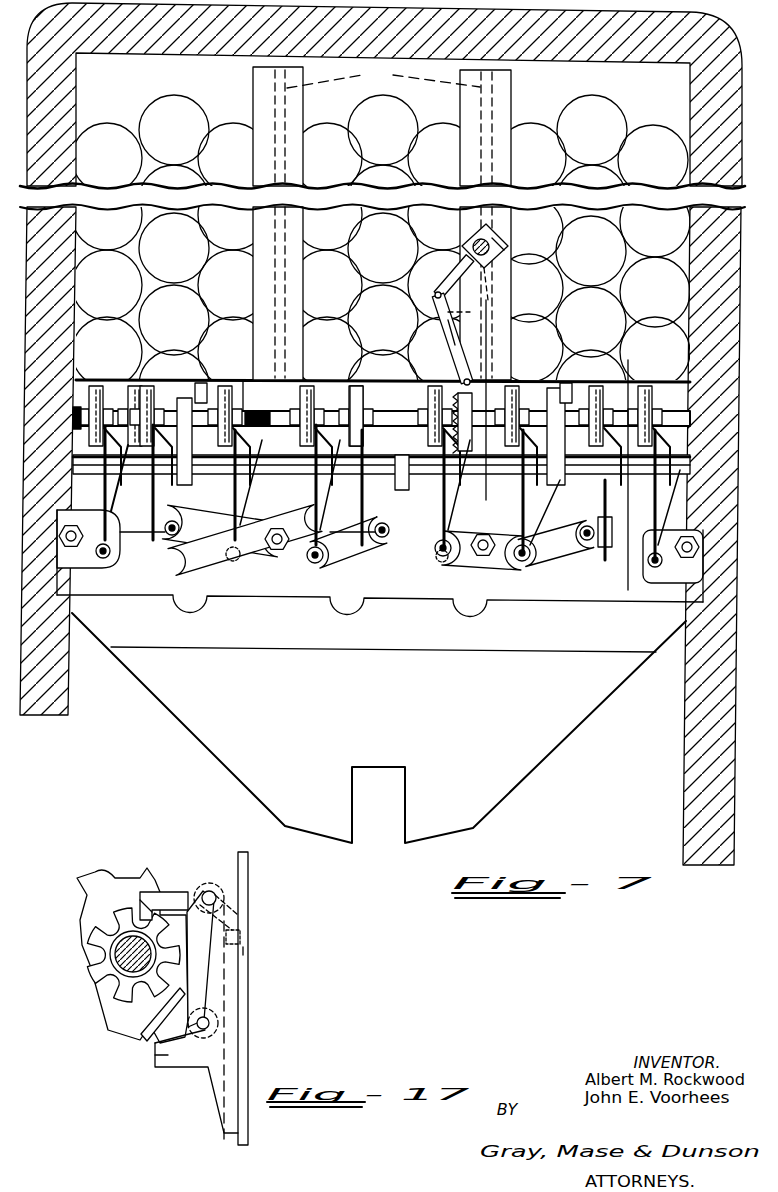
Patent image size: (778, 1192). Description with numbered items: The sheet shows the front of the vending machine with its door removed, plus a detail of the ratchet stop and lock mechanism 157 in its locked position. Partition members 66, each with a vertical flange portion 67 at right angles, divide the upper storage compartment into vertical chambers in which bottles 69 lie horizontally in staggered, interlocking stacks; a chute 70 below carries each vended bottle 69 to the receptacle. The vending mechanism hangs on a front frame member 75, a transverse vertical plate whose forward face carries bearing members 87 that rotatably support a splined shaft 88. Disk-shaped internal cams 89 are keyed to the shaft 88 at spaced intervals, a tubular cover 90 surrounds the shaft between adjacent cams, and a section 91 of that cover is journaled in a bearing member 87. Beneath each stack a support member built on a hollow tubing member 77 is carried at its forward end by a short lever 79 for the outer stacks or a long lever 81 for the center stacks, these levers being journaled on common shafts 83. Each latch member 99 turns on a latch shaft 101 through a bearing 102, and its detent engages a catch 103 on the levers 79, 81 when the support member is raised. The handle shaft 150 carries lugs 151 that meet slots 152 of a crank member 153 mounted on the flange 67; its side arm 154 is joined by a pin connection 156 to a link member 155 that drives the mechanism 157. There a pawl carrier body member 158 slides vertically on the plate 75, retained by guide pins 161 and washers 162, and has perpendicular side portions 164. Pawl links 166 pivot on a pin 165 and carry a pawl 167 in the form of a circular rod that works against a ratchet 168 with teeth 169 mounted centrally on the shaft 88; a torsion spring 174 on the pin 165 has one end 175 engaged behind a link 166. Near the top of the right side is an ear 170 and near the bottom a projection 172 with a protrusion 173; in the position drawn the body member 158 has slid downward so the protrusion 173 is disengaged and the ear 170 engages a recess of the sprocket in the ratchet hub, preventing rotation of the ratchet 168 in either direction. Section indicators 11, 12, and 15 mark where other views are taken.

In FIG. 7, the section line 11 is at (630, 366).
In FIG. 7, the section line 12 is at (488, 367).
In FIG. 7, the sprocket spacer 15 is at (367, 414).
In FIG. 7, the partition members 66 is at (383, 76).
In FIG. 7, the vertical flange portion 67 is at (253, 91).
In FIG. 7, the bottles 69 is at (148, 120).
In FIG. 7, the chute 70 is at (534, 770).
In FIG. 7, the front frame member 75 is at (243, 377).
In FIG. 7, the hollow tubing members 77 is at (103, 559).
In FIG. 7, the short lever 79 is at (316, 564).
In FIG. 7, the long levers 81 is at (410, 556).
In FIG. 7, the common shaft 83 is at (74, 548).
In FIG. 7, the bearing members 87 is at (200, 380).
In FIG. 7, the splined shaft 88 is at (258, 412).
In FIG. 17, the splined shaft 88 is at (116, 969).
In FIG. 7, the internal cams 89 is at (143, 387).
In FIG. 7, the tubular cover 90 is at (112, 410).
In FIG. 17, the tubular cover 90 is at (113, 936).
In FIG. 7, the section of tubular cover 91 is at (168, 396).
In FIG. 7, the latch member 99 is at (118, 493).
In FIG. 7, the latch shaft 101 is at (273, 467).
In FIG. 7, the bearing 102 is at (323, 480).
In FIG. 7, the catch 103 is at (116, 536).
In FIG. 7, the shaft 150 is at (476, 240).
In FIG. 7, the lugs 151 is at (500, 240).
In FIG. 7, the slots 152 is at (500, 262).
In FIG. 7, the crank member 153 is at (470, 245).
In FIG. 7, the side arm 154 is at (445, 274).
In FIG. 7, the link member 155 is at (470, 312).
In FIG. 7, the pin connection 156 is at (440, 300).
In FIG. 7, the ratchet stop and lock mechanism 157 is at (441, 372).
In FIG. 17, the ratchet stop and lock mechanism 157 is at (171, 880).
In FIG. 17, the pawl carrier body member 158 is at (248, 853).
In FIG. 17, the guide pins 161 is at (243, 938).
In FIG. 17, the washers 162 is at (248, 951).
In FIG. 17, the side portions 164 is at (222, 1050).
In FIG. 17, the pin 165 is at (208, 890).
In FIG. 17, the pawl links 166 is at (157, 1014).
In FIG. 17, the pawl 167 is at (210, 1024).
In FIG. 17, the ratchet 168 is at (93, 900).
In FIG. 17, the teeth 169 is at (147, 868).
In FIG. 17, the ear 170 is at (140, 900).
In FIG. 17, the projection 172 is at (167, 1058).
In FIG. 17, the protrusion 173 is at (196, 1030).
In FIG. 17, the torsion spring 174 is at (230, 903).
In FIG. 17, the end of torsion spring 175 is at (232, 926).